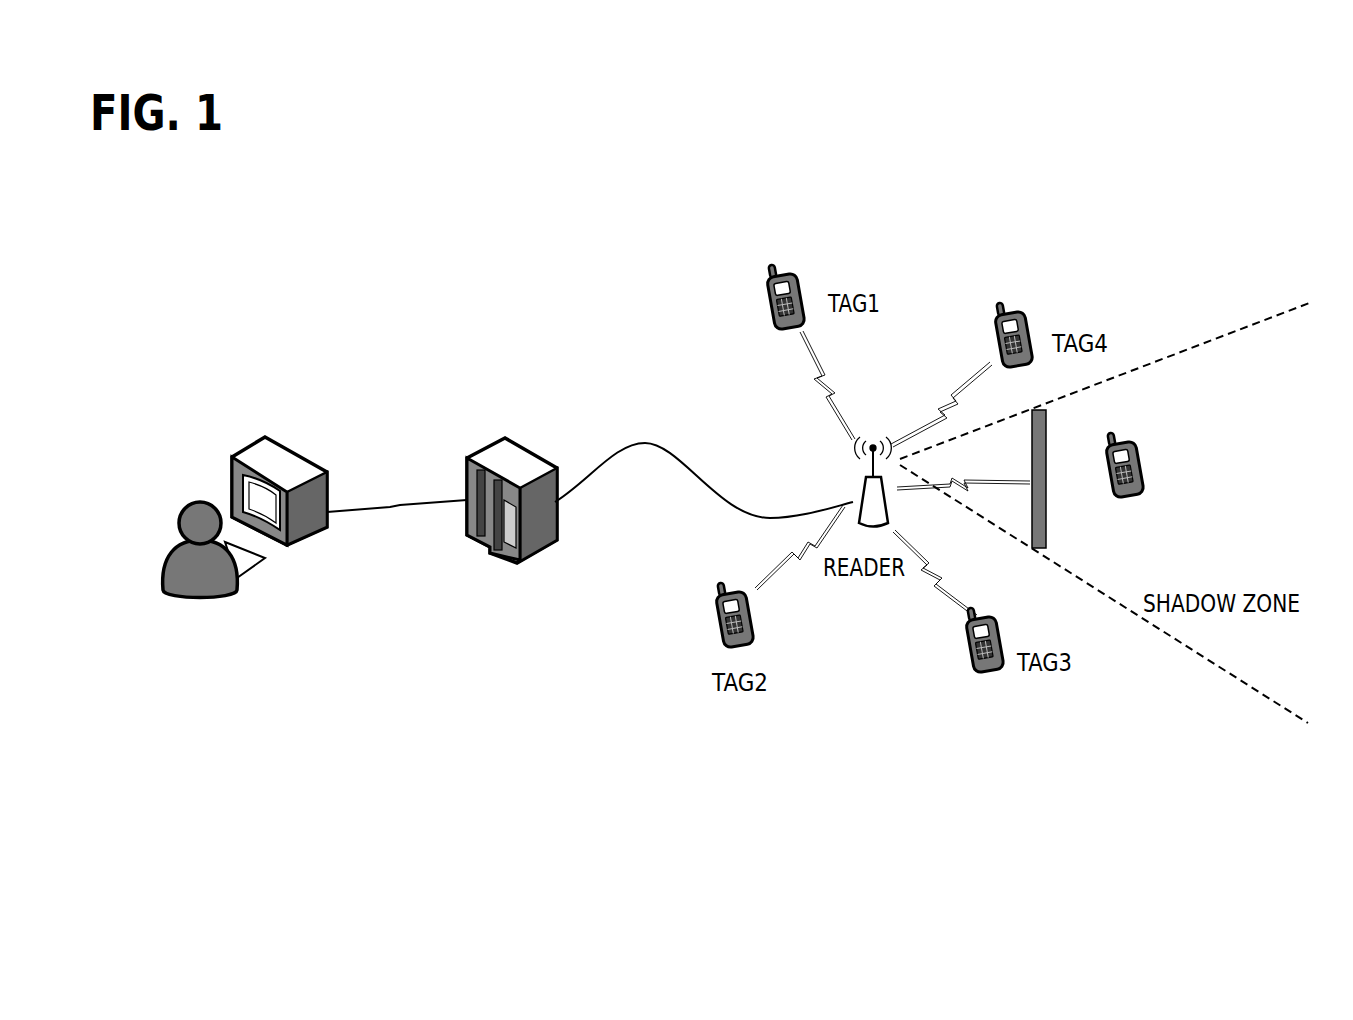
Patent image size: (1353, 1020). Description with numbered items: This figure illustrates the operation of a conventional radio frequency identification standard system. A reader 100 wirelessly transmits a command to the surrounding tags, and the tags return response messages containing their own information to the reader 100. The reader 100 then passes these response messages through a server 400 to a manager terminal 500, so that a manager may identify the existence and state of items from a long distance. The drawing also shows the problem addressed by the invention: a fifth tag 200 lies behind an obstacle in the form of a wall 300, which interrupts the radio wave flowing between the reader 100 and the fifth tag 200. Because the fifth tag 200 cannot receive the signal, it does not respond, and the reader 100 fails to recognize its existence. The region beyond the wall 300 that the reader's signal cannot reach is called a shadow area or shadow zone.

The reader 100 is at (893, 515).
The fifth tag 200 is at (1145, 470).
The obstacle (wall) 300 is at (1048, 515).
The server 400 is at (528, 450).
The manager terminal 500 is at (298, 450).